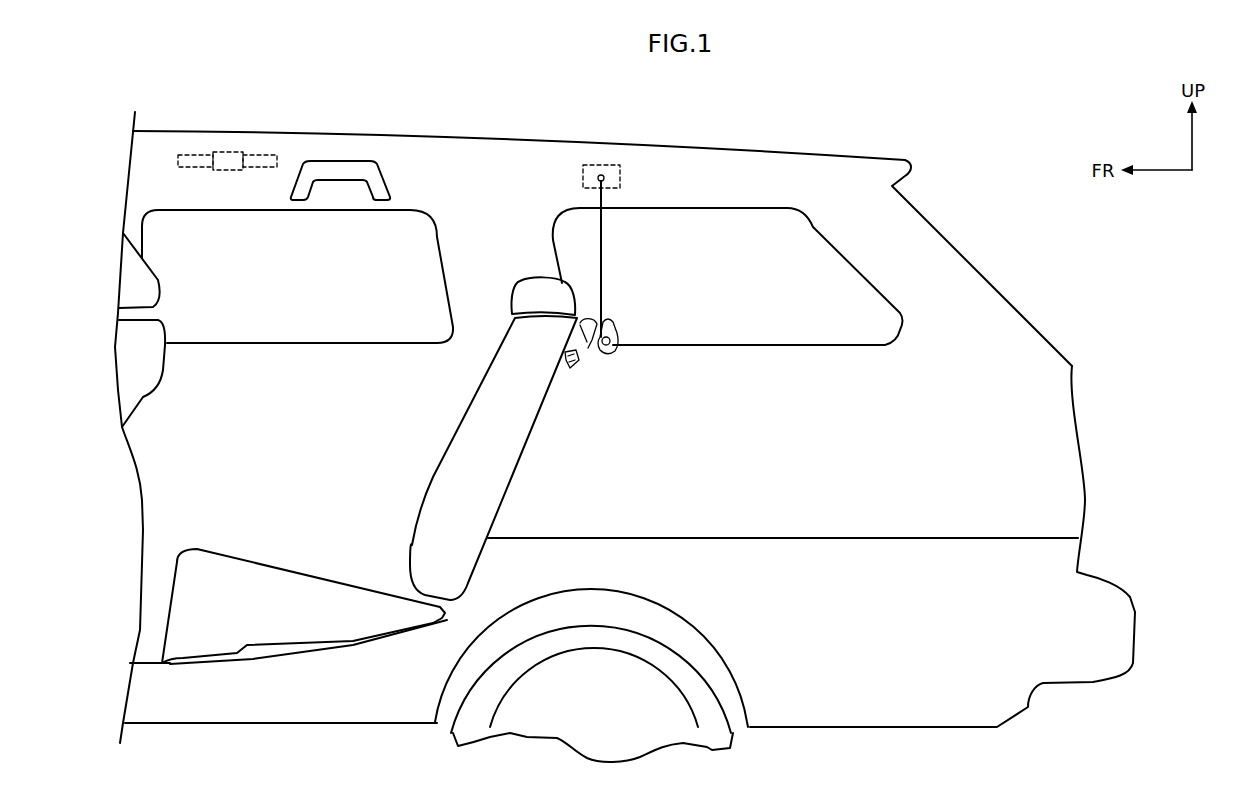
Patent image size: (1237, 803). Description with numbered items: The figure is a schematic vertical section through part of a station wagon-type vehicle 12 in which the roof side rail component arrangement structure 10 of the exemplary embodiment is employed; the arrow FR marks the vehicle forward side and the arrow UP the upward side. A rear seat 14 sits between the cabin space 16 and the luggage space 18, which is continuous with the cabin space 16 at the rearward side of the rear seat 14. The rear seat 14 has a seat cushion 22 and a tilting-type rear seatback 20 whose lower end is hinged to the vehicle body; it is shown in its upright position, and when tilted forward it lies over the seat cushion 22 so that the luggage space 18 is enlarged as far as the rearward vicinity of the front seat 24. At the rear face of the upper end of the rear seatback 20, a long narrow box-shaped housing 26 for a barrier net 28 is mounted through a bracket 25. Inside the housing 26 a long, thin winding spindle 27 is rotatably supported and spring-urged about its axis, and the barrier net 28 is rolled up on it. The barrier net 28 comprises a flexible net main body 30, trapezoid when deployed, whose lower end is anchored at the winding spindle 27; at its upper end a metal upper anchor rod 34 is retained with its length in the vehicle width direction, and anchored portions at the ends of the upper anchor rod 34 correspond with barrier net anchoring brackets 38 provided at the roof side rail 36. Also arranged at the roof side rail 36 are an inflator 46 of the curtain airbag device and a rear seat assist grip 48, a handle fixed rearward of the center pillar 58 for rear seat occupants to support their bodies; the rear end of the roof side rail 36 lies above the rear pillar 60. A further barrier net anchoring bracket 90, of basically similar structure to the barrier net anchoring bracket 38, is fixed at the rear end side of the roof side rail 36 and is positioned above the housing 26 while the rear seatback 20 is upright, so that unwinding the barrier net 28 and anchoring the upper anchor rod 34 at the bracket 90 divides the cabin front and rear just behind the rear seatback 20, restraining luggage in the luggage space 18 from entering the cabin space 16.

The roof side rail component arrangement structure 10 is at (278, 105).
The vehicle 12 is at (483, 128).
The rear seat 14 is at (425, 470).
The cabin space 16 is at (307, 450).
The luggage space 18 is at (764, 449).
The rear seatback 20 is at (478, 388).
The seat cushion 22 is at (284, 566).
The front seat 24 is at (152, 400).
The bracket 25 is at (580, 363).
The housing 26 is at (618, 330).
The winding spindle 27 is at (617, 350).
The barrier net 28 is at (610, 237).
The net main body 30 is at (603, 273).
The upper anchor rod 34 is at (602, 173).
The roof side rail 36 is at (412, 163).
The barrier net anchoring bracket 38 is at (233, 152).
The inflator 46 is at (188, 153).
The rear seat assist grip 48 is at (348, 162).
The center pillar 58 is at (142, 232).
The rear pillar 60 is at (437, 247).
The barrier net anchoring bracket 90 is at (609, 165).